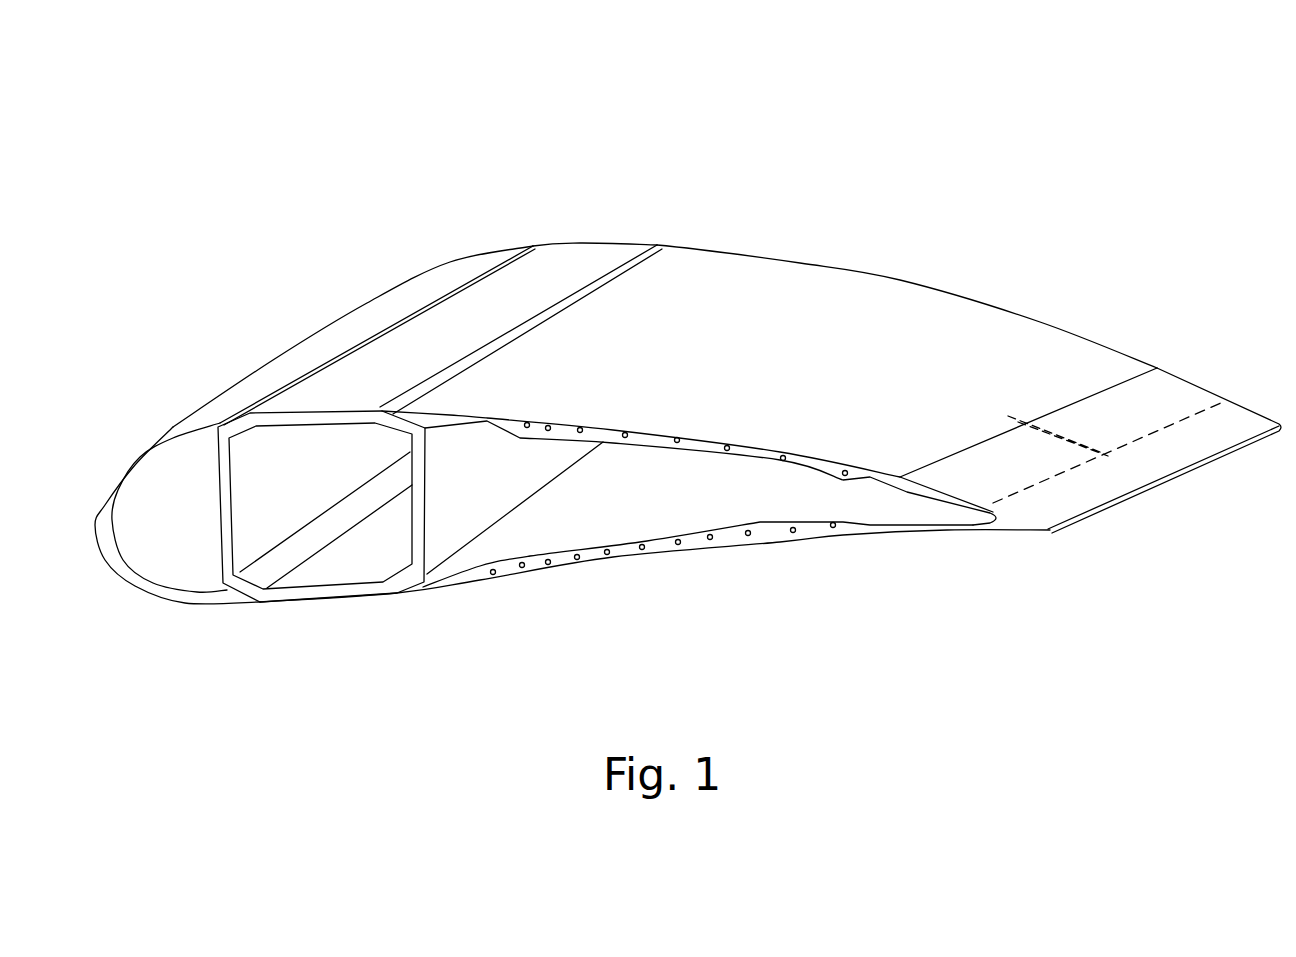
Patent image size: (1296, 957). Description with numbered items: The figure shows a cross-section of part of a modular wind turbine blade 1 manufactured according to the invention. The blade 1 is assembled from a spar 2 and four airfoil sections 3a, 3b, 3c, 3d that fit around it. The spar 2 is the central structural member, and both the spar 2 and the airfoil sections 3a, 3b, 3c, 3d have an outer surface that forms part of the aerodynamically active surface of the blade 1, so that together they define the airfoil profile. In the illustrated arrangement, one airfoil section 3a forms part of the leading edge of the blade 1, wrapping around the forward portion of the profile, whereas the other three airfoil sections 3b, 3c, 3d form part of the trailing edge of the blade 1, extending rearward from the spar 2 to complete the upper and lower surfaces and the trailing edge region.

The modular wind turbine blade 1 is at (367, 133).
The spar 2 is at (572, 263).
The airfoil section 3a is at (307, 358).
The airfoil section 3b is at (918, 313).
The airfoil section 3c is at (658, 550).
The airfoil section 3d is at (1130, 476).